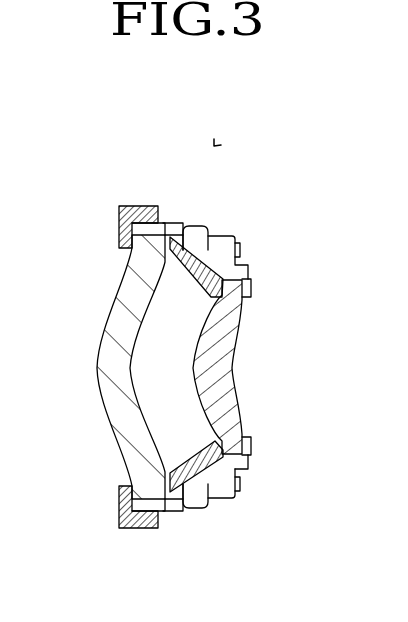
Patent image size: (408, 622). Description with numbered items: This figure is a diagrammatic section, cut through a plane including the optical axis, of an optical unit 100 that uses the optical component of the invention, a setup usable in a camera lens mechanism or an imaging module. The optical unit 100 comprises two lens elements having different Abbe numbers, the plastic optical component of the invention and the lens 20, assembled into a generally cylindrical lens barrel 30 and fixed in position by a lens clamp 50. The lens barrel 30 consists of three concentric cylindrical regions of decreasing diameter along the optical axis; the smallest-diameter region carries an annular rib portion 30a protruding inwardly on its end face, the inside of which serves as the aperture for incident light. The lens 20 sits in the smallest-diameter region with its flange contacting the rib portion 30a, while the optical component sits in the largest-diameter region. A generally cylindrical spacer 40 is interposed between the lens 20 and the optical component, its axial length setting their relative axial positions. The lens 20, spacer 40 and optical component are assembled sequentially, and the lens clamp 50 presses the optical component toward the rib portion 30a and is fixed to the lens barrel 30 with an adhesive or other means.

The optical unit 100 is at (214, 146).
The lens 20 is at (251, 287).
The lens barrel 30 is at (193, 229).
The annular rib portion 30a is at (251, 449).
The spacer 40 is at (224, 500).
The lens clamp 50 is at (135, 528).